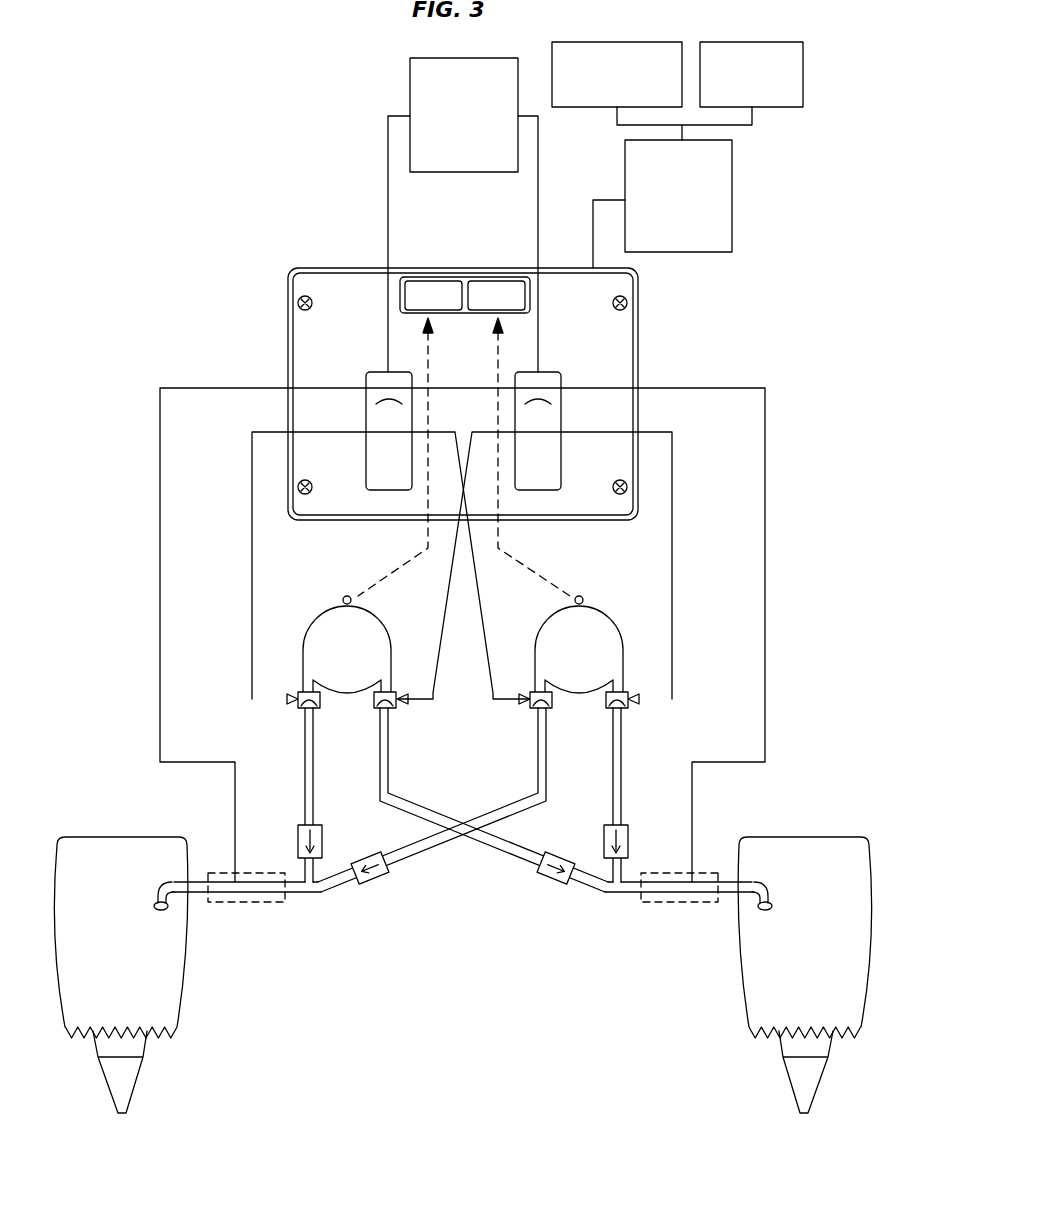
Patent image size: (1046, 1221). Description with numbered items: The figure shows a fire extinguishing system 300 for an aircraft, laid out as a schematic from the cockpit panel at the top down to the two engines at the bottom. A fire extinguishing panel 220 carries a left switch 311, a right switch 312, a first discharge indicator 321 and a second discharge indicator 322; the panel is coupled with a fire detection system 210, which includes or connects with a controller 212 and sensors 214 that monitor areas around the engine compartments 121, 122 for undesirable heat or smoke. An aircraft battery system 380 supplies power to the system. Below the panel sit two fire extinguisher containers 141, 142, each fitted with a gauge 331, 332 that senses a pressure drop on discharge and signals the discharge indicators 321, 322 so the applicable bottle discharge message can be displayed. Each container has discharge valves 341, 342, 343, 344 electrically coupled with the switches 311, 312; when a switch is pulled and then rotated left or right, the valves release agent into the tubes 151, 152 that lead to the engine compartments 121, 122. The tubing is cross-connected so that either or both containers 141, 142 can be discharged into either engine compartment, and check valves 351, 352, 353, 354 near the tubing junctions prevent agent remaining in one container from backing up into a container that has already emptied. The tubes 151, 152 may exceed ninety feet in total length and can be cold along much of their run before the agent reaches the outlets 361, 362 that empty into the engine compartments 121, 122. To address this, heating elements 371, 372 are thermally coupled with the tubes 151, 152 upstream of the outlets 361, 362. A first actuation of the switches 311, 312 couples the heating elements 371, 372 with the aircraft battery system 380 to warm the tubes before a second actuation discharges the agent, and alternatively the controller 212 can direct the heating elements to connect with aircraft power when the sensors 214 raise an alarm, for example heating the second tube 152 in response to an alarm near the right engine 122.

The fire extinguishing system 300 is at (212, 90).
The aircraft battery system 380 is at (464, 115).
The controller 212 is at (617, 74).
The sensors 214 is at (751, 74).
The fire detection system 210 is at (678, 196).
The fire extinguishing panel 220 is at (324, 268).
The first discharge indicator 321 is at (435, 280).
The second discharge indicator 322 is at (507, 280).
The left switch 311 is at (377, 372).
The right switch 312 is at (553, 373).
The gauge 331 is at (342, 600).
The gauge 332 is at (584, 600).
The fire extinguisher container 141 is at (347, 649).
The fire extinguisher container 142 is at (579, 649).
The discharge valve 341 is at (320, 703).
The discharge valve 342 is at (397, 703).
The discharge valve 343 is at (552, 703).
The discharge valve 344 is at (628, 703).
The check valve 351 is at (323, 840).
The check valve 352 is at (378, 878).
The check valve 353 is at (551, 880).
The check valve 354 is at (604, 840).
The tube 151 is at (308, 894).
The second tube 152 is at (625, 894).
The heating element 371 is at (258, 903).
The second heating element 372 is at (670, 903).
The outlet 361 is at (153, 907).
The outlet 362 is at (777, 908).
The engine compartment 121 is at (121, 975).
The right engine 122 is at (805, 975).